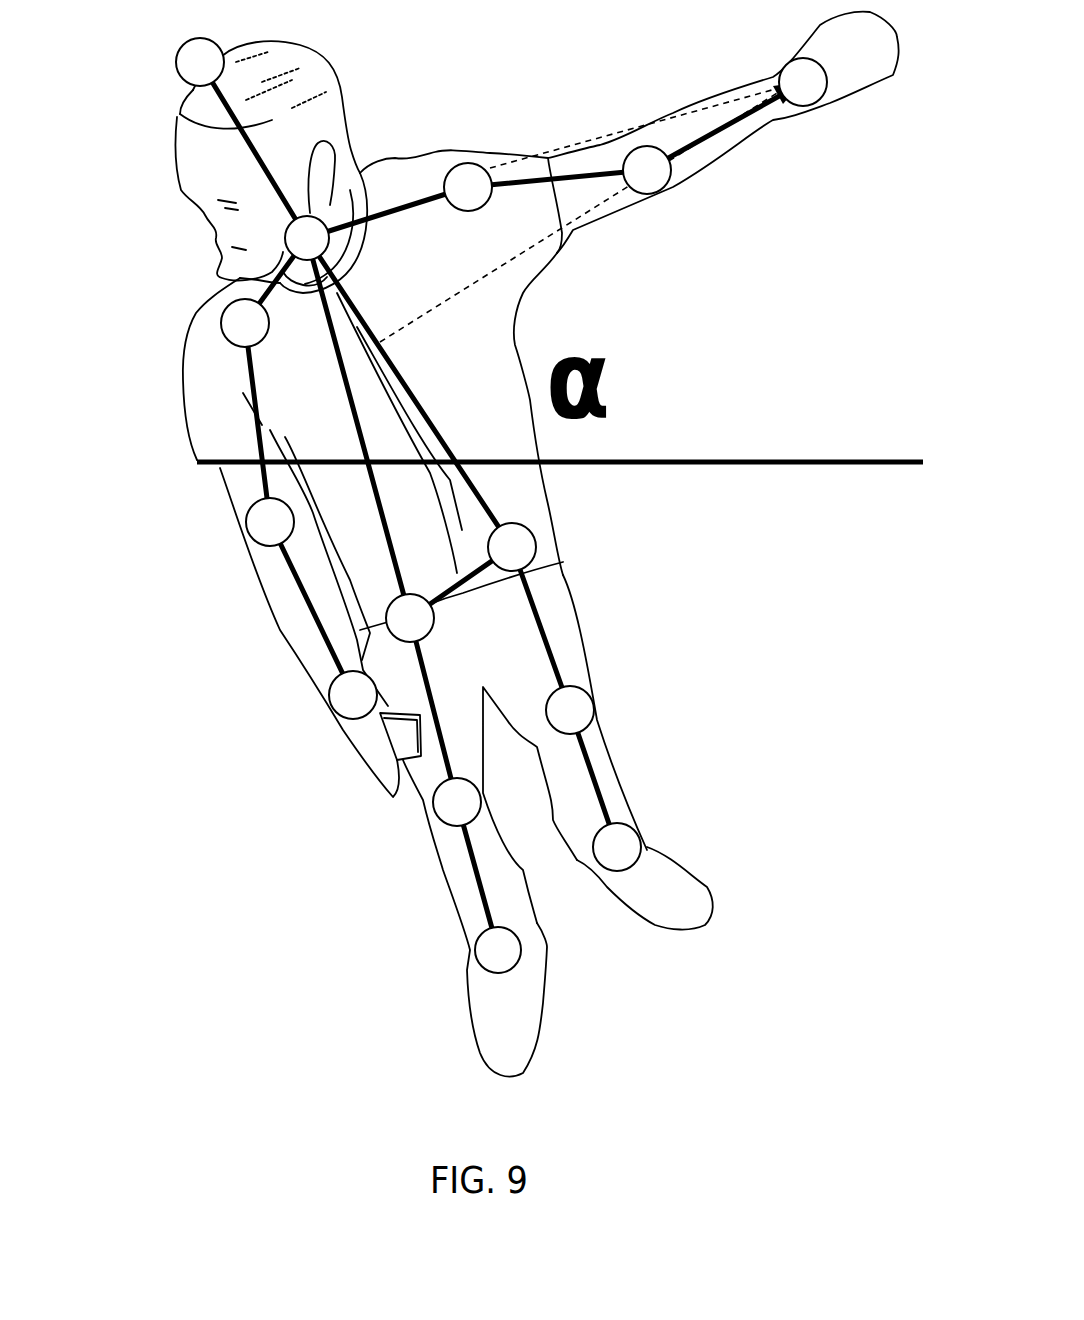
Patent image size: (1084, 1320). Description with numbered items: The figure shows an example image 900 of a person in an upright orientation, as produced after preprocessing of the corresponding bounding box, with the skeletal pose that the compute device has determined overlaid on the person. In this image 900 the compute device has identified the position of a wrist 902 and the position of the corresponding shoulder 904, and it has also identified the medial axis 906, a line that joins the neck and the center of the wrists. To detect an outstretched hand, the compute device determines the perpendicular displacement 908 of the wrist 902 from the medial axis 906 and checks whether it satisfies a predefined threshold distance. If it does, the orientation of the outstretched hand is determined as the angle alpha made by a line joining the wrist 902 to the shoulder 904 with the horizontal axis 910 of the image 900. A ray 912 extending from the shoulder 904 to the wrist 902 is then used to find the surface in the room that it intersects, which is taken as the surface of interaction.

The image 900 is at (96, 85).
The wrist 902 is at (812, 60).
The shoulder 904 is at (462, 165).
The medial axis 906 is at (345, 318).
The perpendicular displacement 908 is at (572, 227).
The horizontal axis 910 is at (904, 462).
The ray 912 is at (600, 137).